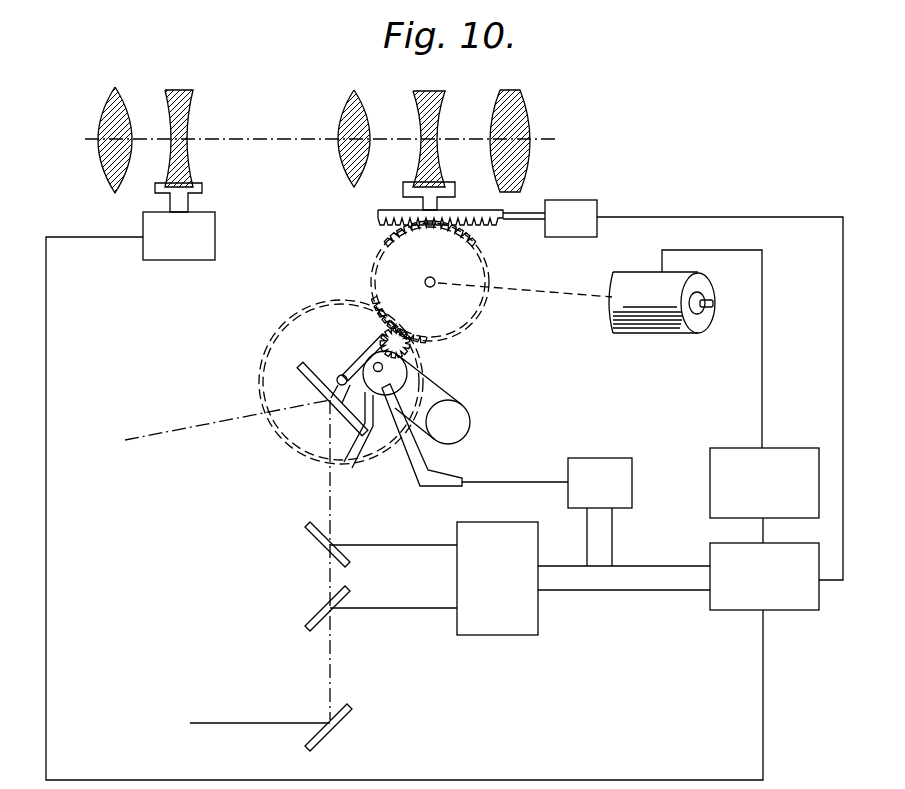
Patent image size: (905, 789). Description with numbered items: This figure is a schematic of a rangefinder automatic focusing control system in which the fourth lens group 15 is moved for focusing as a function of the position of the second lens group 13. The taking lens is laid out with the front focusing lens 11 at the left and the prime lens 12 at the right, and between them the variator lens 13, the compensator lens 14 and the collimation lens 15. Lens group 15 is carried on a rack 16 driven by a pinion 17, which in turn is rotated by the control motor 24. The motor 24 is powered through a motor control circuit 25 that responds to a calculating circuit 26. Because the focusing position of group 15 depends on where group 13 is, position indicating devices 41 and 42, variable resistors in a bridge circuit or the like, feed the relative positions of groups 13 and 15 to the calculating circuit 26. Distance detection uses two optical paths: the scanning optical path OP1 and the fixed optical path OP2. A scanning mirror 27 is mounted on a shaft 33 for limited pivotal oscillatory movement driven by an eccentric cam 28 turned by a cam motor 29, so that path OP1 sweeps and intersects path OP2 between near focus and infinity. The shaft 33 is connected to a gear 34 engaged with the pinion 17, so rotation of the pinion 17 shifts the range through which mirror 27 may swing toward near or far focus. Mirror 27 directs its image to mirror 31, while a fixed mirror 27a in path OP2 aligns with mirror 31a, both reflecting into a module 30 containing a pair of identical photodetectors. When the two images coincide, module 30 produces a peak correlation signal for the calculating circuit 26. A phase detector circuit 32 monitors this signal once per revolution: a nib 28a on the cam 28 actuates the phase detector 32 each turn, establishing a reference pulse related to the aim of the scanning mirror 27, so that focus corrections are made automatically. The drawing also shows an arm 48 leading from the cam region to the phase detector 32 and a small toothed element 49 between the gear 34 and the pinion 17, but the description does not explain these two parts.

The front focusing lens 11 is at (117, 88).
The prime lens 12 is at (508, 90).
The variator lens 13 is at (195, 63).
The compensator lens 14 is at (353, 90).
The collimation lens 15 is at (427, 92).
The rack 16 is at (380, 211).
The pinion 17 is at (470, 306).
The control motor 24 is at (665, 326).
The motor control circuit 25 is at (785, 450).
The calculating circuit 26 is at (800, 606).
The scanning mirror 27 is at (298, 376).
The fixed mirror 27a is at (340, 720).
The eccentric cam 28 is at (354, 447).
The nib 28a is at (380, 368).
The cam motor 29 is at (470, 422).
The module 30 is at (505, 628).
The mirror 31 is at (315, 540).
The mirror 31a is at (313, 612).
The phase detector circuit 32 is at (632, 482).
The shaft 33 is at (345, 372).
The gear 34 is at (336, 301).
The position indicating device 41 is at (178, 253).
The position indicating device 42 is at (573, 232).
The lever 48 is at (410, 474).
The pinion 49 is at (402, 337).
The scanning optical path OP1 is at (200, 560).
The fixed optical path OP2 is at (231, 724).